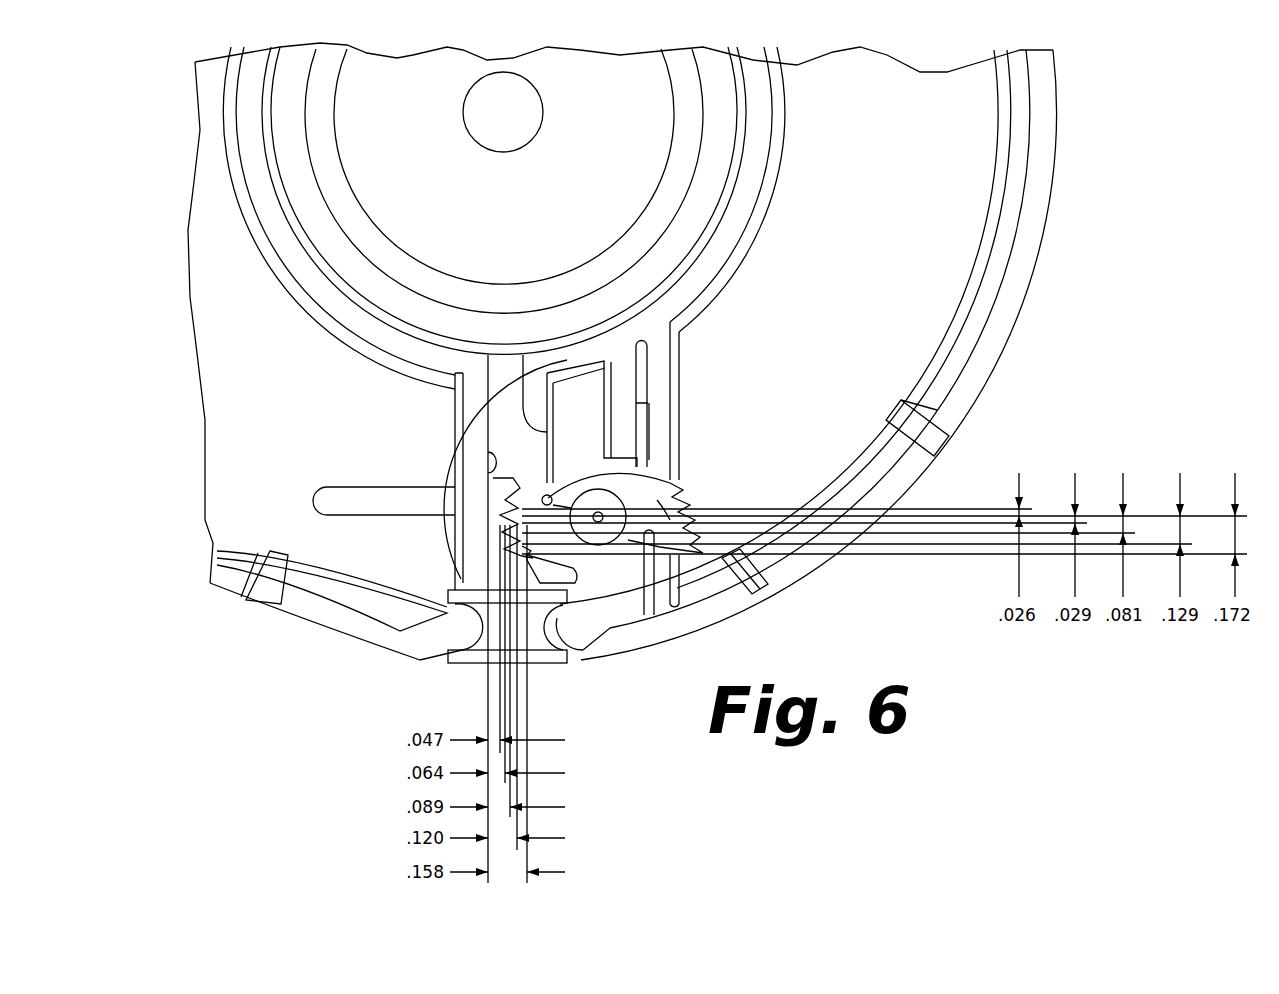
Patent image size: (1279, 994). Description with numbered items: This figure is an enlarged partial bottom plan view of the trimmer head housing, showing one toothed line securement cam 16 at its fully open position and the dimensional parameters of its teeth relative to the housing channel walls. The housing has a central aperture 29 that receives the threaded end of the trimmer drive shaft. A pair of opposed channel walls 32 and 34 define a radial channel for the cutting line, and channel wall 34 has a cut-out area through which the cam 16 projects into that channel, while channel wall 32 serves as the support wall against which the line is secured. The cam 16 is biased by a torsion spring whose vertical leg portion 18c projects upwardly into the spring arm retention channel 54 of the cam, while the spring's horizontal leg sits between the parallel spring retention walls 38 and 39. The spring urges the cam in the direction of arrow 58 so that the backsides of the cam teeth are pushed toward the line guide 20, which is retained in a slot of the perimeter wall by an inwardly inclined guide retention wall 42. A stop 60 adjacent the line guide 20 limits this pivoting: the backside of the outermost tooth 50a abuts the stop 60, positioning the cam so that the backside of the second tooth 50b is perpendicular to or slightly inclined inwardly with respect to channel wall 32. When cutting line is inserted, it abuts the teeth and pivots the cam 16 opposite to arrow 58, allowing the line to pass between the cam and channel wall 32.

The aperture 29 is at (538, 96).
The spring retention wall 38 is at (643, 362).
The spring retention wall 39 is at (680, 395).
The channel wall 34 is at (546, 436).
The vertical leg portion 18c is at (550, 494).
The arrow 58 is at (443, 504).
The second tooth 50b is at (520, 520).
The spring arm retention channel 54 is at (658, 498).
The toothed cam 16 is at (694, 481).
The channel wall 32 is at (457, 528).
The outermost tooth 50a is at (528, 556).
The guide retention wall 42 is at (460, 626).
The line guide 20 is at (582, 652).
The stop 60 is at (538, 577).